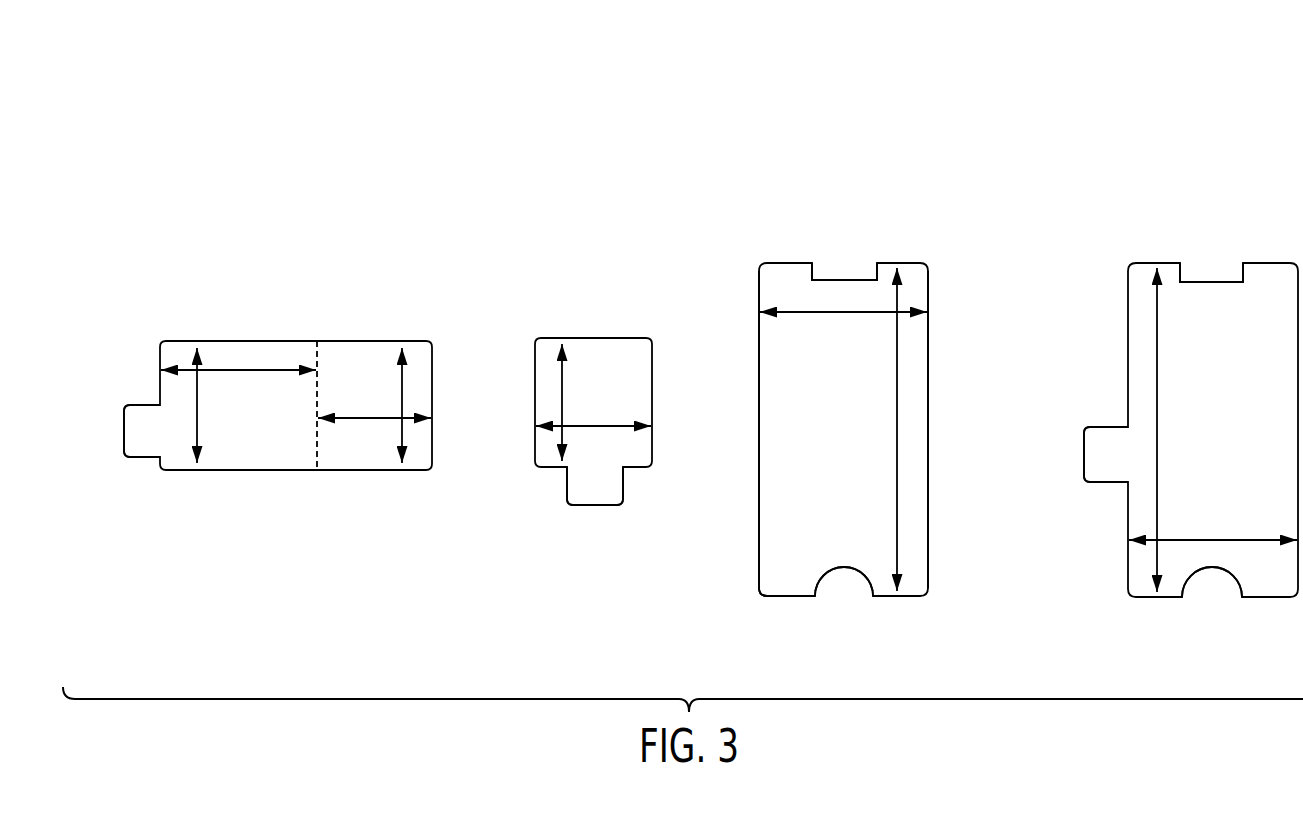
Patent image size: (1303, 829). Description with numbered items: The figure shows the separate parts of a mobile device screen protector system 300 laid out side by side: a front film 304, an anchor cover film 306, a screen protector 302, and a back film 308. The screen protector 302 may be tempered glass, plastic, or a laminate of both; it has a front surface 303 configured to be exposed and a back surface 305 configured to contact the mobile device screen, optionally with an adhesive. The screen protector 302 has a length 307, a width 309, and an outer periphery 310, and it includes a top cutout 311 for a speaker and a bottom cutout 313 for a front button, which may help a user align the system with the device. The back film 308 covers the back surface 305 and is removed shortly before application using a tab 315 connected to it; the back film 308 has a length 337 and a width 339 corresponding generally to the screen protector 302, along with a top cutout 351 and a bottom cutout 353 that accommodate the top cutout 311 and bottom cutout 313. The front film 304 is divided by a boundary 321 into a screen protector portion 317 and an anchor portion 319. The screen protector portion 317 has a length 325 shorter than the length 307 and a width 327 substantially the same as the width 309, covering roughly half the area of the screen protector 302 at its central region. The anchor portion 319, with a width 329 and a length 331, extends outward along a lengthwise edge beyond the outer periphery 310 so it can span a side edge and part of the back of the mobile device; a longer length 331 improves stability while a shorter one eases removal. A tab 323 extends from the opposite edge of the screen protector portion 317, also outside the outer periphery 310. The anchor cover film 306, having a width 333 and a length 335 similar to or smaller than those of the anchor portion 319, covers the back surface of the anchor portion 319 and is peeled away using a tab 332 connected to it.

The mobile device screen protector system 300 is at (1220, 133).
The screen protector 302 is at (893, 263).
The front surface 303 is at (783, 583).
The front film 304 is at (163, 471).
The back surface 305 is at (929, 425).
The anchor cover film 306 is at (607, 337).
The length 307 is at (896, 507).
The back film 308 is at (1259, 263).
The width 309 is at (823, 317).
The outer periphery 310 is at (758, 575).
The top cutout 311 is at (830, 280).
The bottom cutout 313 is at (857, 573).
The tab 315 is at (1085, 480).
The screen protector portion 317 is at (280, 458).
The anchor portion 319 is at (355, 458).
The boundary 321 is at (318, 352).
The tab 323 is at (133, 417).
The length 325 is at (198, 428).
The width 327 is at (232, 368).
The width 329 is at (355, 415).
The length 331 is at (403, 377).
The tab 332 is at (592, 493).
The width 333 is at (578, 428).
The length 335 is at (563, 368).
The length 337 is at (1158, 343).
The width 339 is at (1182, 537).
The top cutout 351 is at (1192, 280).
The bottom cutout 353 is at (1217, 570).